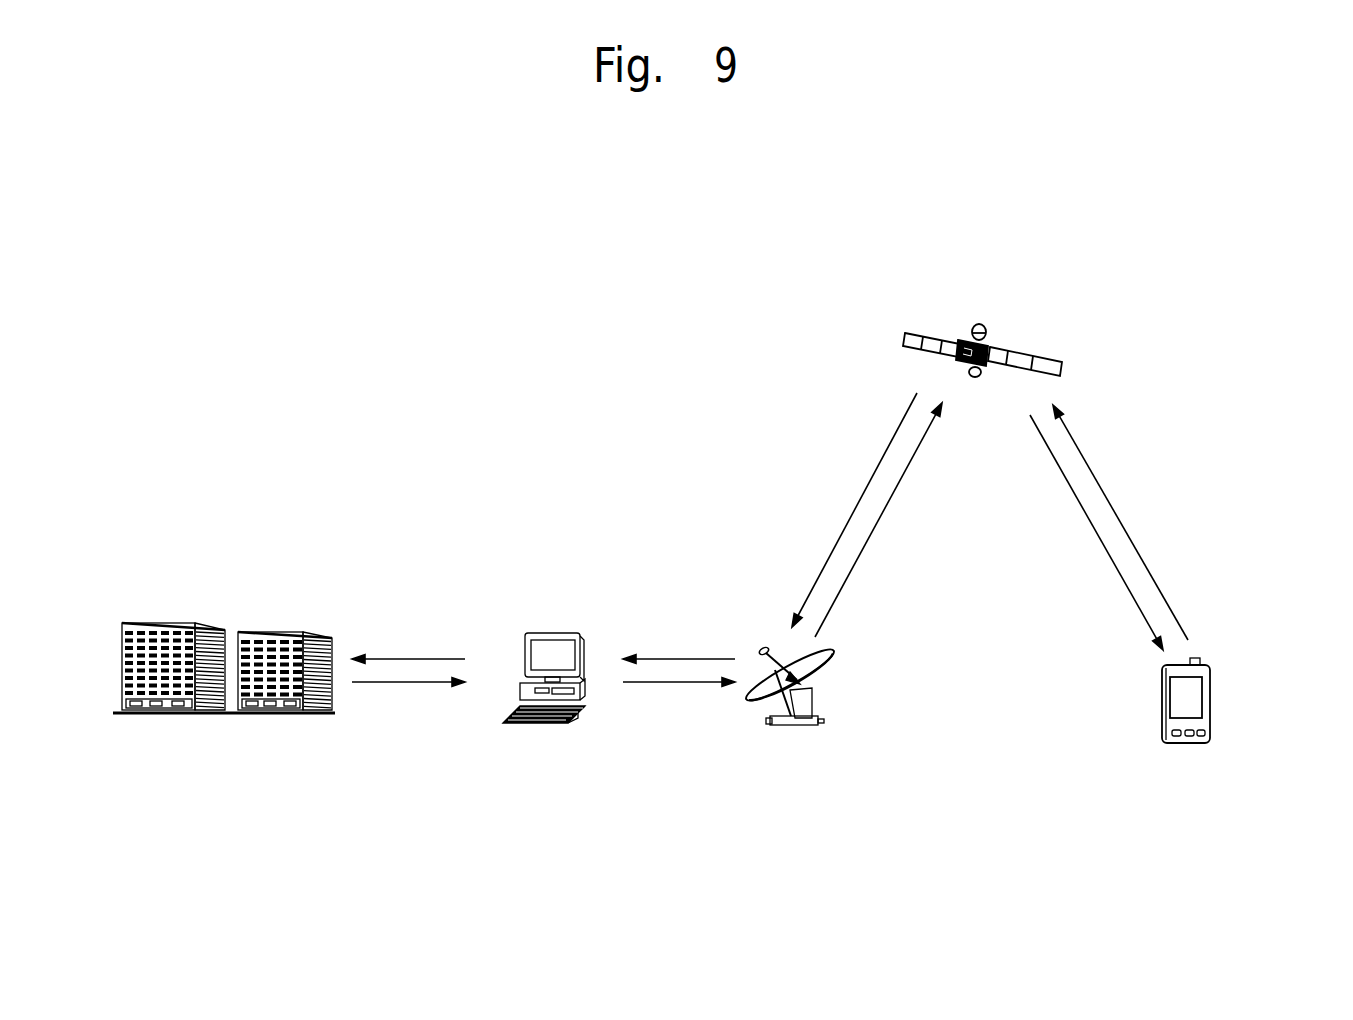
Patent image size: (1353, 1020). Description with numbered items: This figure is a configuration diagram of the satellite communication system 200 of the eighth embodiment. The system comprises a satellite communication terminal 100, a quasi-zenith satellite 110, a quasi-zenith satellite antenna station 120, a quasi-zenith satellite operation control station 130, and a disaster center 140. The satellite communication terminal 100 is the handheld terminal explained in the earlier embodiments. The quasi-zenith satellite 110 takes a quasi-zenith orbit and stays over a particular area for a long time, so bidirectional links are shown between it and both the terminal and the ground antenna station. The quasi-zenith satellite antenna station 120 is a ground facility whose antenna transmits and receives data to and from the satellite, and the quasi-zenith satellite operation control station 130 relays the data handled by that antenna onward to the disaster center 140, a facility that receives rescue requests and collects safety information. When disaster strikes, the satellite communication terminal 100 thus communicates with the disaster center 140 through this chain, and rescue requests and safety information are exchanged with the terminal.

The satellite communication terminal 100 is at (1210, 685).
The quasi-zenith satellite 110 is at (1010, 345).
The quasi-zenith satellite antenna station 120 is at (840, 655).
The quasi-zenith satellite operation control station 130 is at (568, 632).
The disaster center 140 is at (275, 630).
The satellite communication system 200 is at (808, 246).